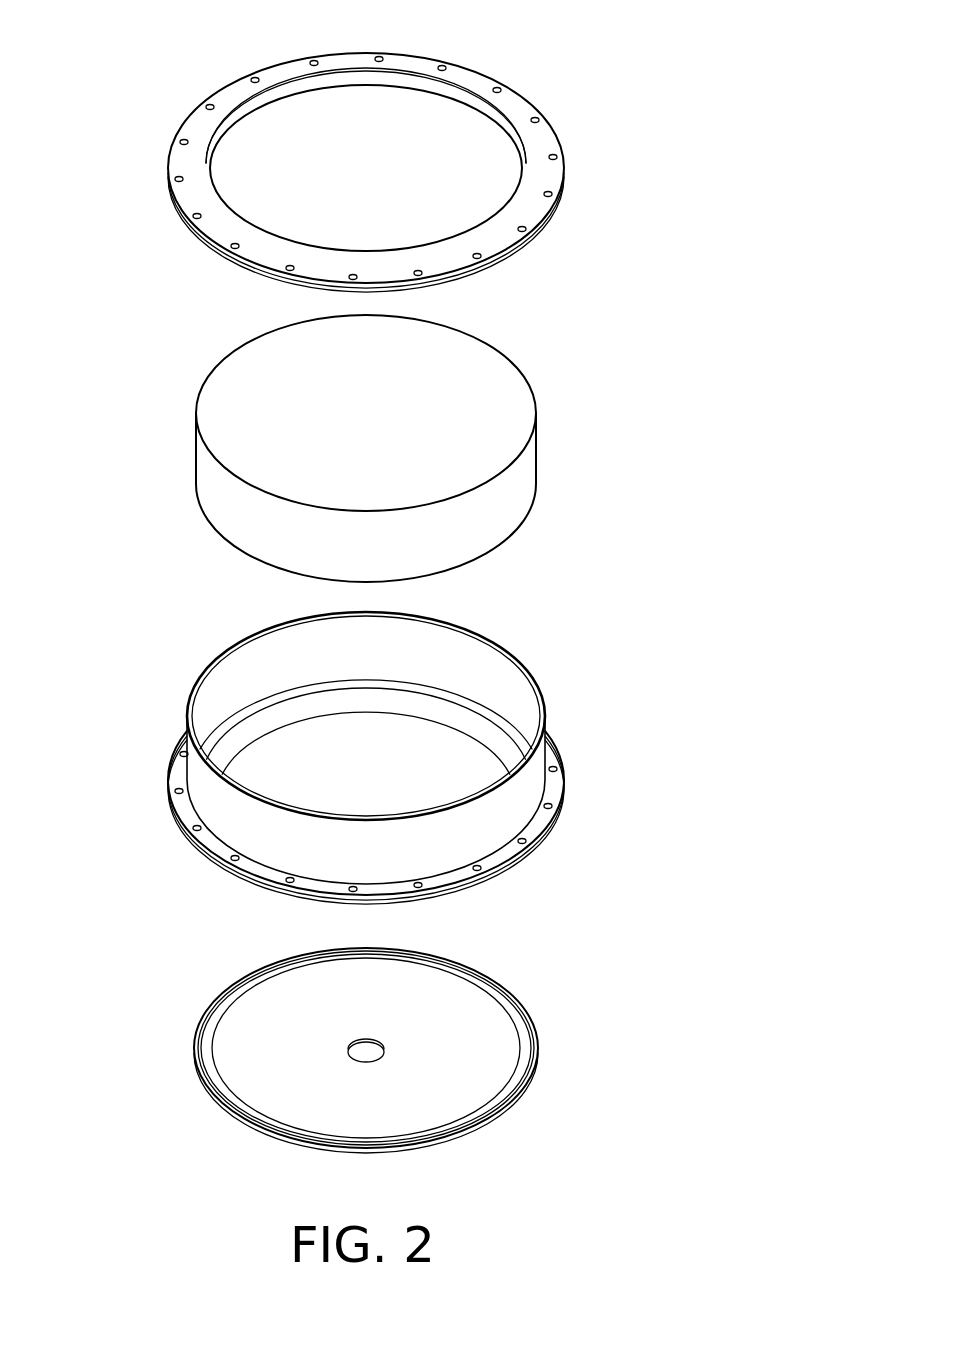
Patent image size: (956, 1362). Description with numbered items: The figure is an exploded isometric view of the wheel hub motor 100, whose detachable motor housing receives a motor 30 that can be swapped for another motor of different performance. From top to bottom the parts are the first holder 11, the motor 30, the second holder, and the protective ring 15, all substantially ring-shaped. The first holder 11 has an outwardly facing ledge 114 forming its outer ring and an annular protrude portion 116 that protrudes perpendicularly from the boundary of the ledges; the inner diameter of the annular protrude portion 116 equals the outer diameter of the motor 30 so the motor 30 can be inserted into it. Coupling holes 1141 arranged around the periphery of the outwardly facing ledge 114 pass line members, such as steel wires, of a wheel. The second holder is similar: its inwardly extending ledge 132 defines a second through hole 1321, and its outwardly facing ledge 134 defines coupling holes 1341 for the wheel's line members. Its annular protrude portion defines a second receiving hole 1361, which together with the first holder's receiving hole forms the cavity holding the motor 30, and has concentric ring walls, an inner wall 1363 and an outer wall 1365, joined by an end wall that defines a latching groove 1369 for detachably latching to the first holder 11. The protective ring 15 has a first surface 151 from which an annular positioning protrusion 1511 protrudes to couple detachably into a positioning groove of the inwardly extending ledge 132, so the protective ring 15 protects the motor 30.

The wheel hub motor 100 is at (150, 40).
The first holder 11 is at (568, 138).
The outwardly facing ledge 114 is at (520, 108).
The annular protrude portion 116 is at (445, 93).
The coupling holes 1141 is at (557, 200).
The motor 30 is at (498, 377).
The second receiving hole 1361 is at (293, 653).
The latching groove 1369 is at (190, 691).
The inner wall 1363 is at (518, 692).
The inwardly extending ledge 132 is at (397, 707).
The second through hole 1321 is at (293, 767).
The outwardly facing ledge 134 is at (547, 830).
The coupling holes 1341 is at (490, 878).
The outer wall 1365 is at (533, 768).
The protective ring 15 is at (485, 1007).
The first surface 151 is at (250, 1008).
The annular positioning protrusion 1511 is at (212, 1082).